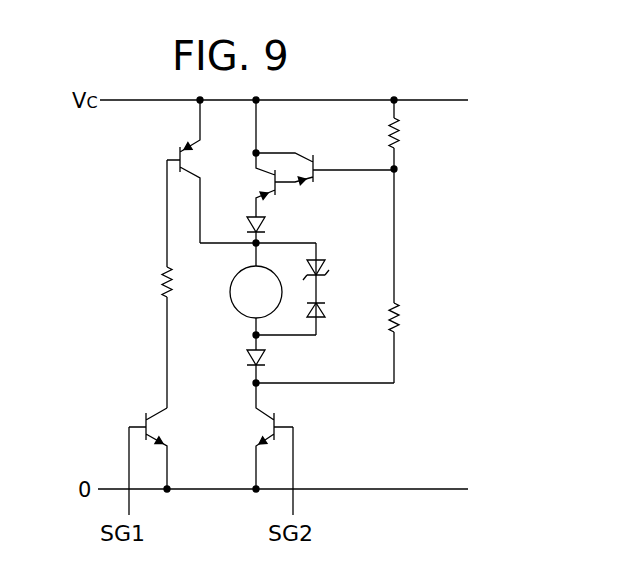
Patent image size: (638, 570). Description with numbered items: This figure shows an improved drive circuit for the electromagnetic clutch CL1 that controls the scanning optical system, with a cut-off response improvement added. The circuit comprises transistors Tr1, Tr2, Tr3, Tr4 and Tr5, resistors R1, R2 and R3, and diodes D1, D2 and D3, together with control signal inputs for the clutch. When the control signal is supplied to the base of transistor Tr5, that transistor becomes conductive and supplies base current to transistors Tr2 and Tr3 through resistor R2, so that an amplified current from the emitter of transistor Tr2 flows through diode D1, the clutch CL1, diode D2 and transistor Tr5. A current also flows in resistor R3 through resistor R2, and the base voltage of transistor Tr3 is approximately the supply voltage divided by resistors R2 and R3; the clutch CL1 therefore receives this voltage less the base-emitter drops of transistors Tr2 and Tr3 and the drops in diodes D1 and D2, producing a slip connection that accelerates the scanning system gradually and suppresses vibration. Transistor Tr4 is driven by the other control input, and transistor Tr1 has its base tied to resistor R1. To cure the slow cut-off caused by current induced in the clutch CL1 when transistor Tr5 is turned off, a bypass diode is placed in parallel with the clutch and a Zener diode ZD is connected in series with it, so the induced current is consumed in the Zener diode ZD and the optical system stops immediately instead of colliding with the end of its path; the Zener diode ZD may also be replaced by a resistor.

The transistor Tr1 is at (190, 158).
The transistor Tr2 is at (265, 184).
The transistor Tr3 is at (305, 172).
The transistor Tr4 is at (152, 424).
The transistor Tr5 is at (266, 431).
The resistor R1 is at (162, 285).
The resistor R2 is at (400, 136).
The resistor R3 is at (400, 315).
The diode D1 is at (265, 225).
The diode D2 is at (265, 358).
The diode D3 is at (326, 312).
The Zener diode ZD is at (326, 272).
The electromagnetic clutch CL1 is at (256, 289).